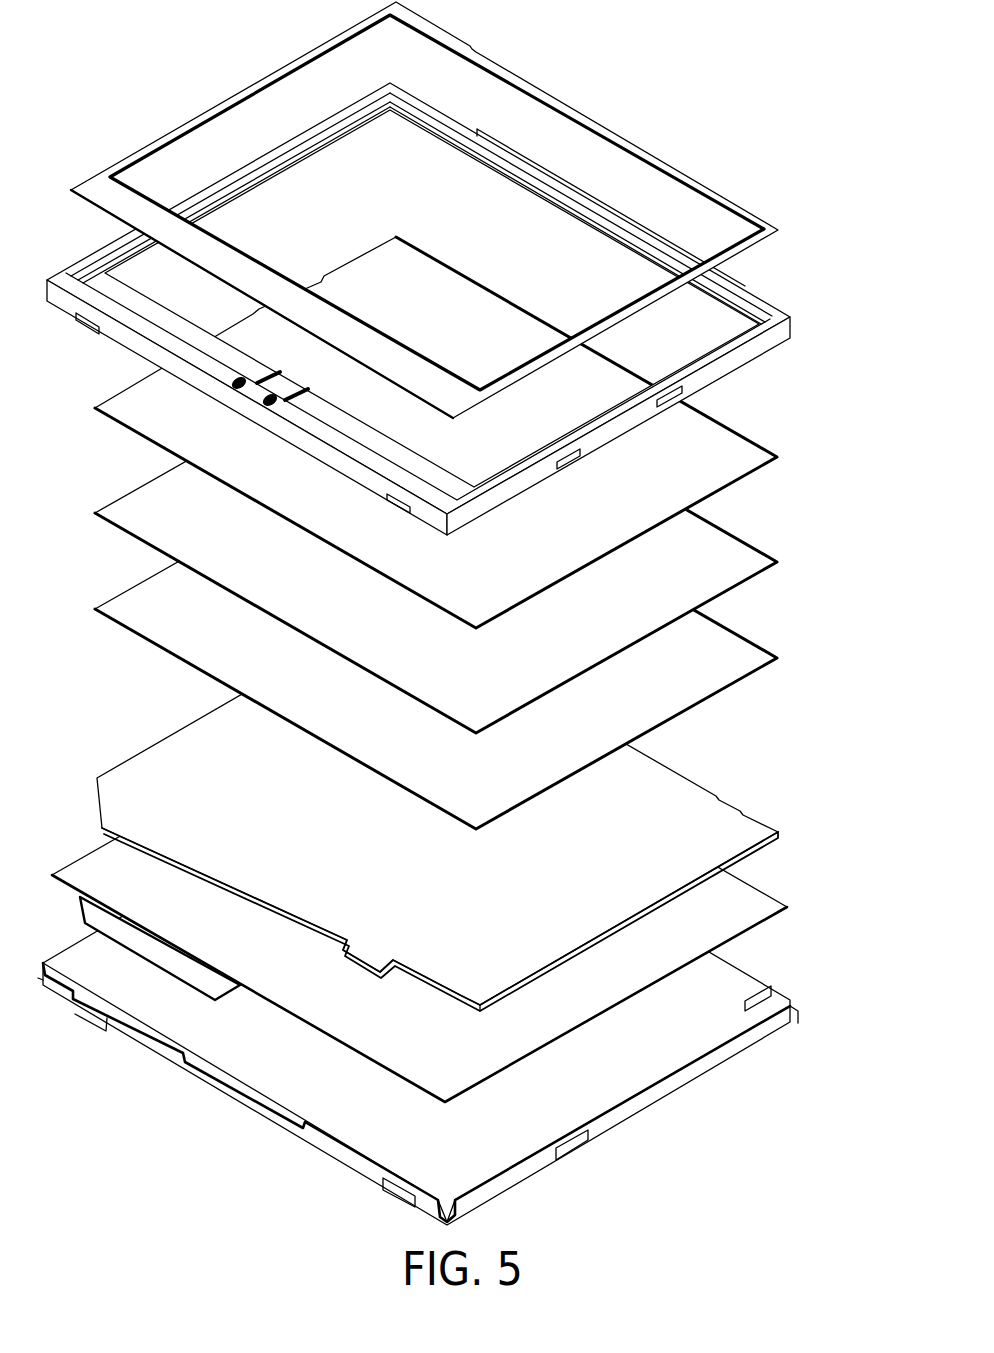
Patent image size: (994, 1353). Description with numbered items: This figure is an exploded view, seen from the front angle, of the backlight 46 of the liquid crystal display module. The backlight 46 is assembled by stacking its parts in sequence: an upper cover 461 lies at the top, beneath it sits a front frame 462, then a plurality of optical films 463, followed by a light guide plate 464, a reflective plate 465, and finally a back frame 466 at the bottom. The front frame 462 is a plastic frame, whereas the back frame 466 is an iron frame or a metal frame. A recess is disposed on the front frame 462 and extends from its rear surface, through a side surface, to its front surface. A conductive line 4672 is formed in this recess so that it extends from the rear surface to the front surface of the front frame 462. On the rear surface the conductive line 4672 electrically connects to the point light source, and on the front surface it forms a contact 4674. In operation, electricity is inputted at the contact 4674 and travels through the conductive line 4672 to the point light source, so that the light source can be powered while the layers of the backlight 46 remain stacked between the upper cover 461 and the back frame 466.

The backlight 46 is at (466, 613).
The upper cover 461 is at (454, 210).
The front frame 462 is at (769, 307).
The optical films 463 is at (770, 456).
The light guide plate 464 is at (768, 824).
The reflective plate 465 is at (768, 905).
The back frame 466 is at (768, 991).
The conductive line 4672 is at (303, 400).
The contact 4674 is at (257, 403).